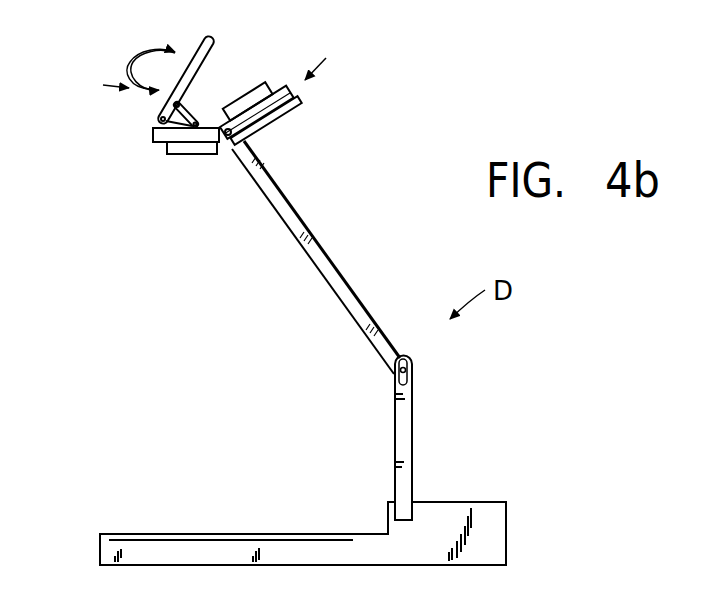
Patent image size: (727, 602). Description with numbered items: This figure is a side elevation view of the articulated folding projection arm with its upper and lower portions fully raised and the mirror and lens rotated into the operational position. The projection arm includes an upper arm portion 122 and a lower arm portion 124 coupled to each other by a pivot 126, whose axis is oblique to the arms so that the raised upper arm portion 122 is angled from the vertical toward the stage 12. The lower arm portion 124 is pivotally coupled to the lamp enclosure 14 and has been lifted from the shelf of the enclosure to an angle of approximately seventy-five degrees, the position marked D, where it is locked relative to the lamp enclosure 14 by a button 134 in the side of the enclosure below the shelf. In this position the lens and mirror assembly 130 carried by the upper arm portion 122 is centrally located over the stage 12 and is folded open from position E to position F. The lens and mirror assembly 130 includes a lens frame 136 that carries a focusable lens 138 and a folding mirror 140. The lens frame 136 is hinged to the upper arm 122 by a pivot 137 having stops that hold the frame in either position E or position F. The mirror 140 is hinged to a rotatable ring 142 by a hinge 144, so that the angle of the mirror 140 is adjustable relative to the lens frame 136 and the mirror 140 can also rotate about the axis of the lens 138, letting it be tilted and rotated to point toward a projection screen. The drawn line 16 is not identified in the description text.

The stage 12 is at (127, 533).
The lamp enclosure 14 is at (504, 517).
The groove 16 is at (214, 540).
The upper arm portion 122 is at (327, 265).
The lower arm portion 124 is at (413, 464).
The pivot 126 is at (409, 371).
The lens and mirror assembly 130 is at (330, 119).
The button 134 is at (387, 518).
The lens frame 136 is at (158, 134).
The pivot 137 is at (226, 136).
The focusable lens 138 is at (190, 157).
The folding mirror 140 is at (206, 46).
The rotatable ring 142 is at (157, 117).
The hinge 144 is at (200, 102).